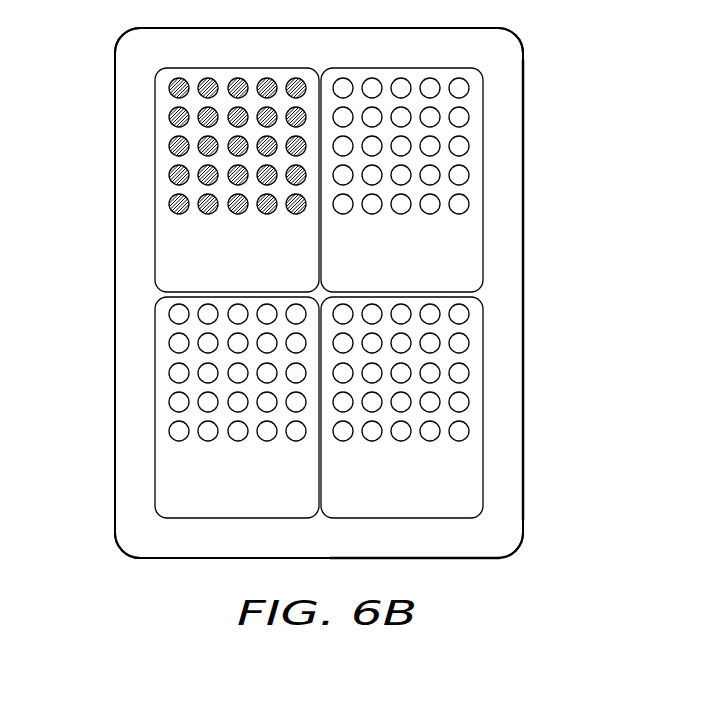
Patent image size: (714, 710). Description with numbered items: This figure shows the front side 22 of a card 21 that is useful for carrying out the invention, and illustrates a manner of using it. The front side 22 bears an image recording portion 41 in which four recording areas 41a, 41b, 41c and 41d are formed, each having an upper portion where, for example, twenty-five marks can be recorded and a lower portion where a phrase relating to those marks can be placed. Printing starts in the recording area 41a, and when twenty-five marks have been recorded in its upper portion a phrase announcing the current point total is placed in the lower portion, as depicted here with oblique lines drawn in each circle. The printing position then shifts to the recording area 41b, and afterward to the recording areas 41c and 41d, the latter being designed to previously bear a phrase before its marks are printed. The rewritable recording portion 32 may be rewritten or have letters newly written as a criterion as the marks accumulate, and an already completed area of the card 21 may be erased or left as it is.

The card 21 is at (112, 100).
The front side 22 is at (513, 70).
The rewritable recording portion 32 is at (320, 291).
The image recording portion 41 is at (320, 291).
The recording area 41a is at (169, 147).
The recording area 41b is at (469, 146).
The recording area 41c is at (169, 402).
The recording area 41d is at (469, 402).